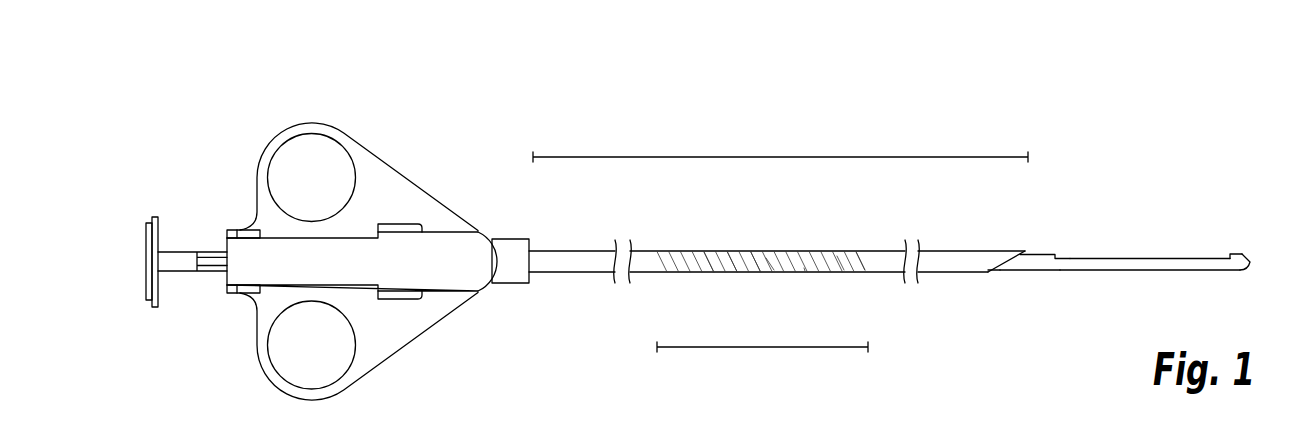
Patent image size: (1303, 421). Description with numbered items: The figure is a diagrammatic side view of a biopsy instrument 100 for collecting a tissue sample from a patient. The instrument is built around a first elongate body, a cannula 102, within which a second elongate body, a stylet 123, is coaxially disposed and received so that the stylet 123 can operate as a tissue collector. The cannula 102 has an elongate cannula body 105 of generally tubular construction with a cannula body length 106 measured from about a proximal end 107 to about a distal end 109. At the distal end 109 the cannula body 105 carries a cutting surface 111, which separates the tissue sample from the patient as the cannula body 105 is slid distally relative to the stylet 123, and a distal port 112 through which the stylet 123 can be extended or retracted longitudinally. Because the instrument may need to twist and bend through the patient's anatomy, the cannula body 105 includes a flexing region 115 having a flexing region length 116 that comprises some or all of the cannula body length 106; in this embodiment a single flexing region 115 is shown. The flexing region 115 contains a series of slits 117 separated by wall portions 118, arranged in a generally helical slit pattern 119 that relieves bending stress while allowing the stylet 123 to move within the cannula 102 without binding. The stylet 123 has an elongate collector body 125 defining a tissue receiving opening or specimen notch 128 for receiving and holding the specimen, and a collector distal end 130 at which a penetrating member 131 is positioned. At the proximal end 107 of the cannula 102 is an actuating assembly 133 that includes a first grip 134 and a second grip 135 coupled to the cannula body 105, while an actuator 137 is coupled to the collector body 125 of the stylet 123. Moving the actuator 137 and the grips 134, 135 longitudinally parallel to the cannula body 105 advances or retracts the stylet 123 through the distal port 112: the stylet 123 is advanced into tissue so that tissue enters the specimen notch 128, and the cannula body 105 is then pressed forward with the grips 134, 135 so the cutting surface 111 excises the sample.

The biopsy instrument 100 is at (697, 126).
The cannula 102 is at (553, 300).
The elongate cannula body 105 is at (963, 250).
The cannula body length 106 is at (747, 157).
The proximal end 107 is at (529, 240).
The distal end 109 is at (1020, 252).
The cutting surface 111 is at (987, 273).
The distal port 112 is at (1023, 253).
The flexing region 115 is at (708, 238).
The flexing region length 116 is at (782, 348).
The slits 117 is at (752, 252).
The wall portions 118 is at (838, 256).
The helical slit pattern 119 is at (866, 258).
The stylet 123 is at (1188, 272).
The elongate collector body 125 is at (1032, 272).
The specimen notch 128 is at (1147, 245).
The collector distal end 130 is at (1252, 263).
The penetrating member 131 is at (1242, 254).
The actuating assembly 133 is at (209, 169).
The first grip 134 is at (355, 140).
The second grip 135 is at (273, 382).
The actuator 137 is at (153, 218).